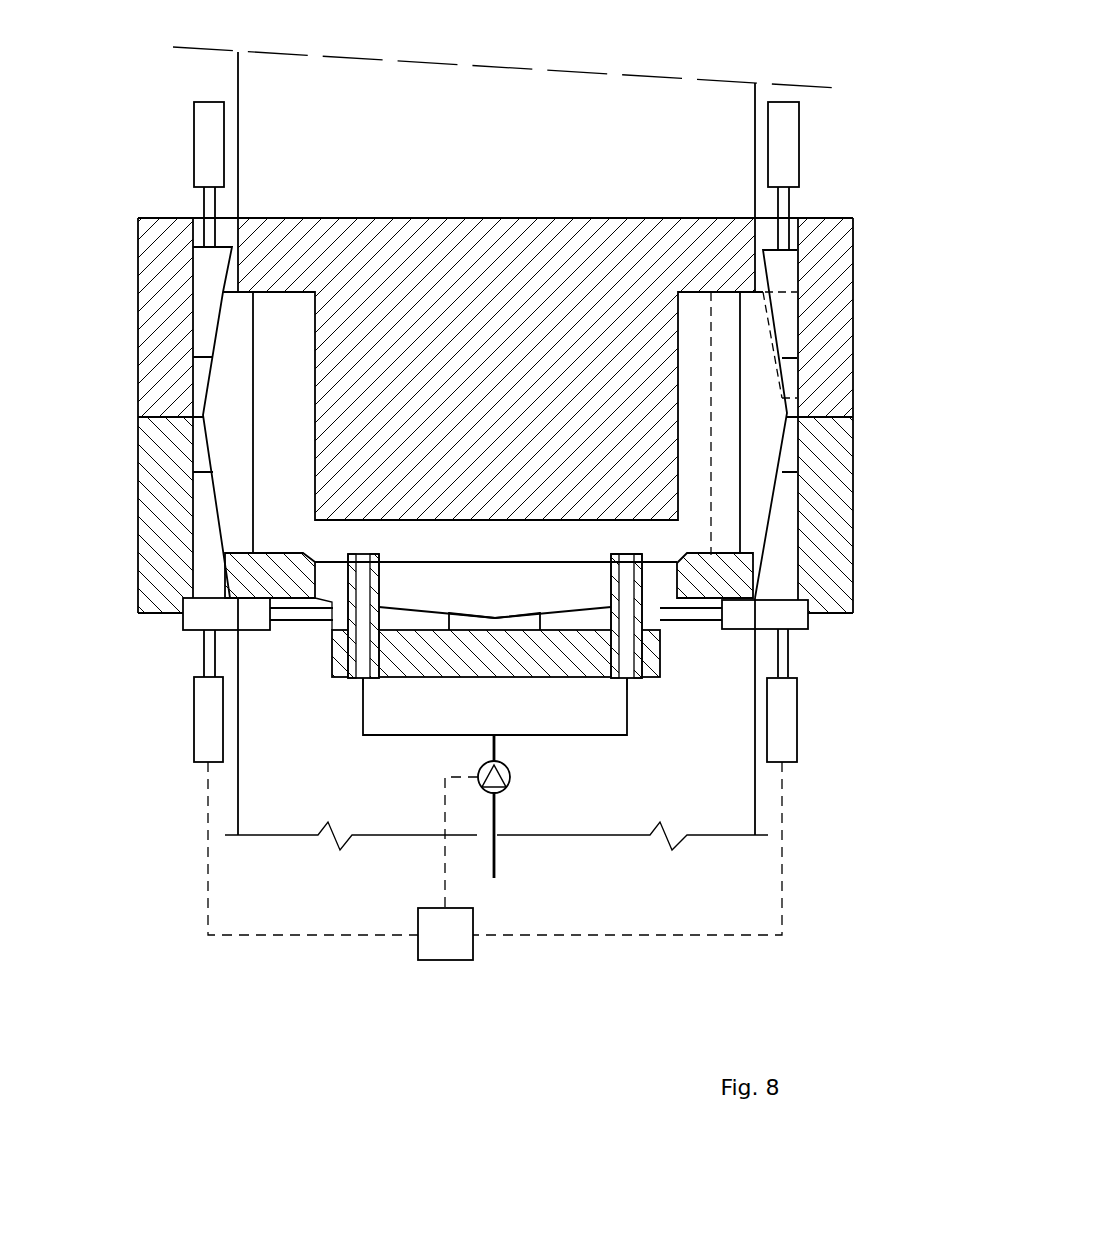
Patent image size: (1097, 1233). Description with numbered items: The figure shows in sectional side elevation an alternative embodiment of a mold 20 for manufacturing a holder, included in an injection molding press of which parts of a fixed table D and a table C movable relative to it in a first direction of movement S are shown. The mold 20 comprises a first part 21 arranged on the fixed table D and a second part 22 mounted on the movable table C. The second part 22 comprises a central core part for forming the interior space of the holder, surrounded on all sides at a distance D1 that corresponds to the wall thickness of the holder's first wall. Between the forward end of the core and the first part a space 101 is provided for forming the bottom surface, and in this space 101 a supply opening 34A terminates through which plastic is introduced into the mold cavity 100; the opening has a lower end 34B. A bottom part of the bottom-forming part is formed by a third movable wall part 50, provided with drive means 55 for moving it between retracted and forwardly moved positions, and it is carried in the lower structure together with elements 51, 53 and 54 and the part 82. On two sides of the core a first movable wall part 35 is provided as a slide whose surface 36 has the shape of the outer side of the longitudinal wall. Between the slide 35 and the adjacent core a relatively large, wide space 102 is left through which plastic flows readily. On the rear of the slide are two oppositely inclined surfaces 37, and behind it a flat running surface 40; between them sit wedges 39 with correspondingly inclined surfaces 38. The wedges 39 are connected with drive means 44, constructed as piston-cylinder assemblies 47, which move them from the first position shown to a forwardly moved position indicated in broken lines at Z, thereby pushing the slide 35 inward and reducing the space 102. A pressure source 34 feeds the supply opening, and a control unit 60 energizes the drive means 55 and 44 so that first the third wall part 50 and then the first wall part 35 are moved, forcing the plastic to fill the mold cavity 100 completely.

The mold 20 is at (316, 982).
The first part 21 is at (840, 578).
The second part 22 is at (840, 250).
The pressure source / pump 34 is at (506, 790).
The supply opening 34A is at (363, 545).
The pin lower end 34B is at (631, 686).
The first movable wall part 35 is at (228, 386).
The surface 36 is at (240, 440).
The inclined surfaces 37 is at (200, 476).
The inclined surfaces of wedges 38 is at (215, 323).
The wedges 39 is at (205, 278).
The running surface 40 is at (190, 304).
The drive means 44 is at (172, 759).
The piston-cylinder assemblies 47 is at (205, 130).
The third movable wall part 50 is at (495, 592).
The support pad 51 is at (467, 617).
The base plate 53 is at (405, 640).
The sheet surface 54 is at (430, 550).
The drive means 55 is at (204, 618).
The control unit 60 is at (445, 948).
The pin head 82 is at (650, 552).
The mold cavity 100 is at (483, 552).
The space 101 is at (566, 552).
The space 102 is at (268, 397).
The table C is at (578, 105).
The first direction of movement S is at (510, 180).
The fixed table D is at (598, 803).
The distance D1 is at (325, 338).
The forwardly moved position Z is at (712, 340).